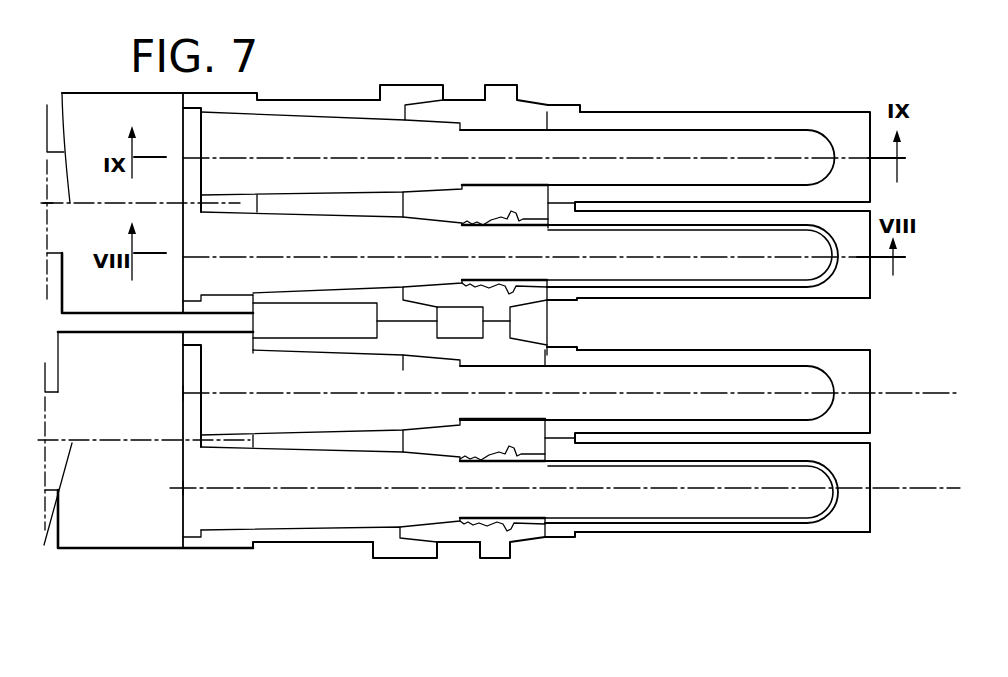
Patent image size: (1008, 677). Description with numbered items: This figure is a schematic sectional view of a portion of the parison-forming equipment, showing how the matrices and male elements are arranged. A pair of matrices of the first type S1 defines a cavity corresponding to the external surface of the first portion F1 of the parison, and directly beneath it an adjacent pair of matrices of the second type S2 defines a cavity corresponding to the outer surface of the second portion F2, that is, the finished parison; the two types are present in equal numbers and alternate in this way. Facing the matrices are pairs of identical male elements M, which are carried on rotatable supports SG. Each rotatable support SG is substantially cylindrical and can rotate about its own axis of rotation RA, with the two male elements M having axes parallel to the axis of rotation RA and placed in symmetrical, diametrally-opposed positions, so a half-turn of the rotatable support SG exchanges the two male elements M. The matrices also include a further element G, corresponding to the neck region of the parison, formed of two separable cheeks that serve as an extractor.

The rotatable support SG is at (90, 93).
The axis of rotation RA is at (77, 93).
The male element M is at (316, 100).
The further element G is at (506, 85).
The first portion F1 is at (638, 130).
The second portion F2 is at (748, 225).
The matrices of the first type S1 is at (873, 112).
The matrices of the second type S2 is at (873, 298).